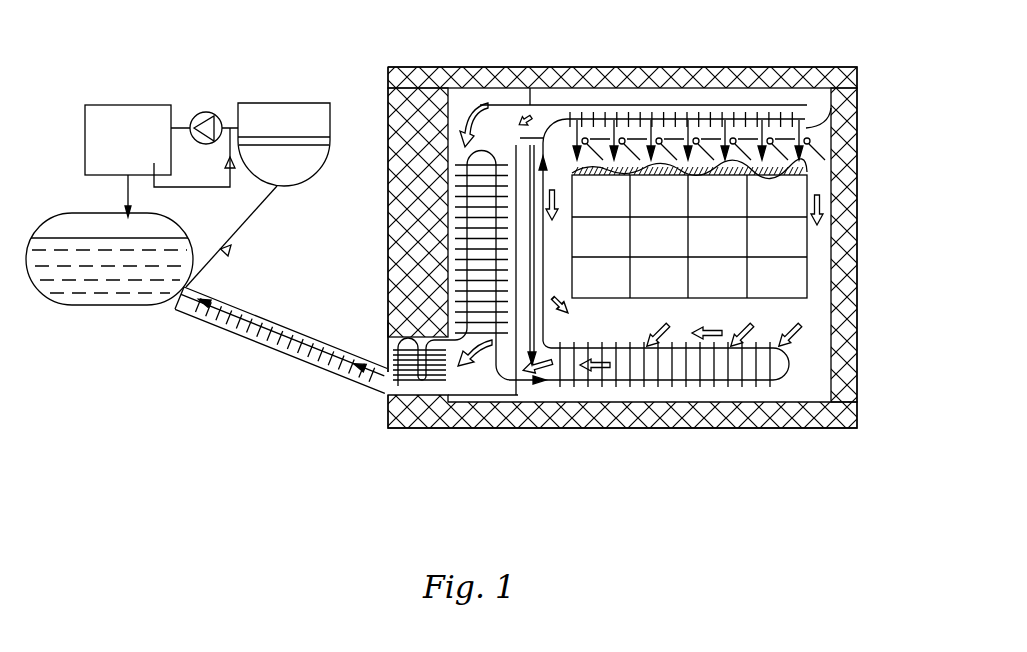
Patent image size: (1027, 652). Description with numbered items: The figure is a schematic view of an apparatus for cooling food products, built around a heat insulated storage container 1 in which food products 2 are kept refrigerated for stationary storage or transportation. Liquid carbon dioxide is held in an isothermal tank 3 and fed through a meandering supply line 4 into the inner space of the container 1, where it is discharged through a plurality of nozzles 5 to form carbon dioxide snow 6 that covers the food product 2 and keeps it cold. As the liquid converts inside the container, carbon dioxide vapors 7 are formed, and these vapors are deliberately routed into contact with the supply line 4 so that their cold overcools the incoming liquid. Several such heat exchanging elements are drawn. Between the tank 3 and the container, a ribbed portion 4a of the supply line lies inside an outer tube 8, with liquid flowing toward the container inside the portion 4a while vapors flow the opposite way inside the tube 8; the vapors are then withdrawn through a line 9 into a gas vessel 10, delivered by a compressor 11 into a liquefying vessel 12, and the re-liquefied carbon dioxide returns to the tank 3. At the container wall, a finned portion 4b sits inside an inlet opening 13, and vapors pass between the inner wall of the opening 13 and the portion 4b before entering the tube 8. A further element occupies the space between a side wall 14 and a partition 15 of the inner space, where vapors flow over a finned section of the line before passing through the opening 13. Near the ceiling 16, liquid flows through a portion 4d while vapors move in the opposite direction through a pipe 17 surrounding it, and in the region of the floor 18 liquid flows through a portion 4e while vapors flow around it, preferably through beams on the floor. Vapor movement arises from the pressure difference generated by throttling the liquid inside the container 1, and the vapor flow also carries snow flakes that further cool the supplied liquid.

The heat insulated storage container 1 is at (857, 193).
The food products 2 is at (785, 247).
The isothermal tank 3 is at (107, 287).
The meandering supply line 4 is at (455, 225).
The portion of the liquid carbon dioxide supply line 4a is at (232, 313).
The finned portion of the liquid carbon dioxide supply line 4b is at (399, 396).
The portion of the liquid carbon dioxide supply line 4d is at (712, 110).
The portion of the liquid carbon dioxide supply line 4e is at (663, 372).
The nozzles 5 is at (856, 68).
The carbon dioxide snow 6 is at (608, 166).
The carbon dioxide vapors 7 is at (850, 131).
The outer tube 8 is at (193, 308).
The line 9 is at (256, 214).
The gas vessel 10 is at (298, 112).
The compressor 11 is at (206, 118).
The liquefying vessel 12 is at (120, 120).
The inlet opening 13 is at (387, 337).
The side wall 14 is at (393, 143).
The partition 15 is at (530, 147).
The ceiling 16 is at (640, 70).
The pipe 17 is at (787, 100).
The floor 18 is at (583, 418).